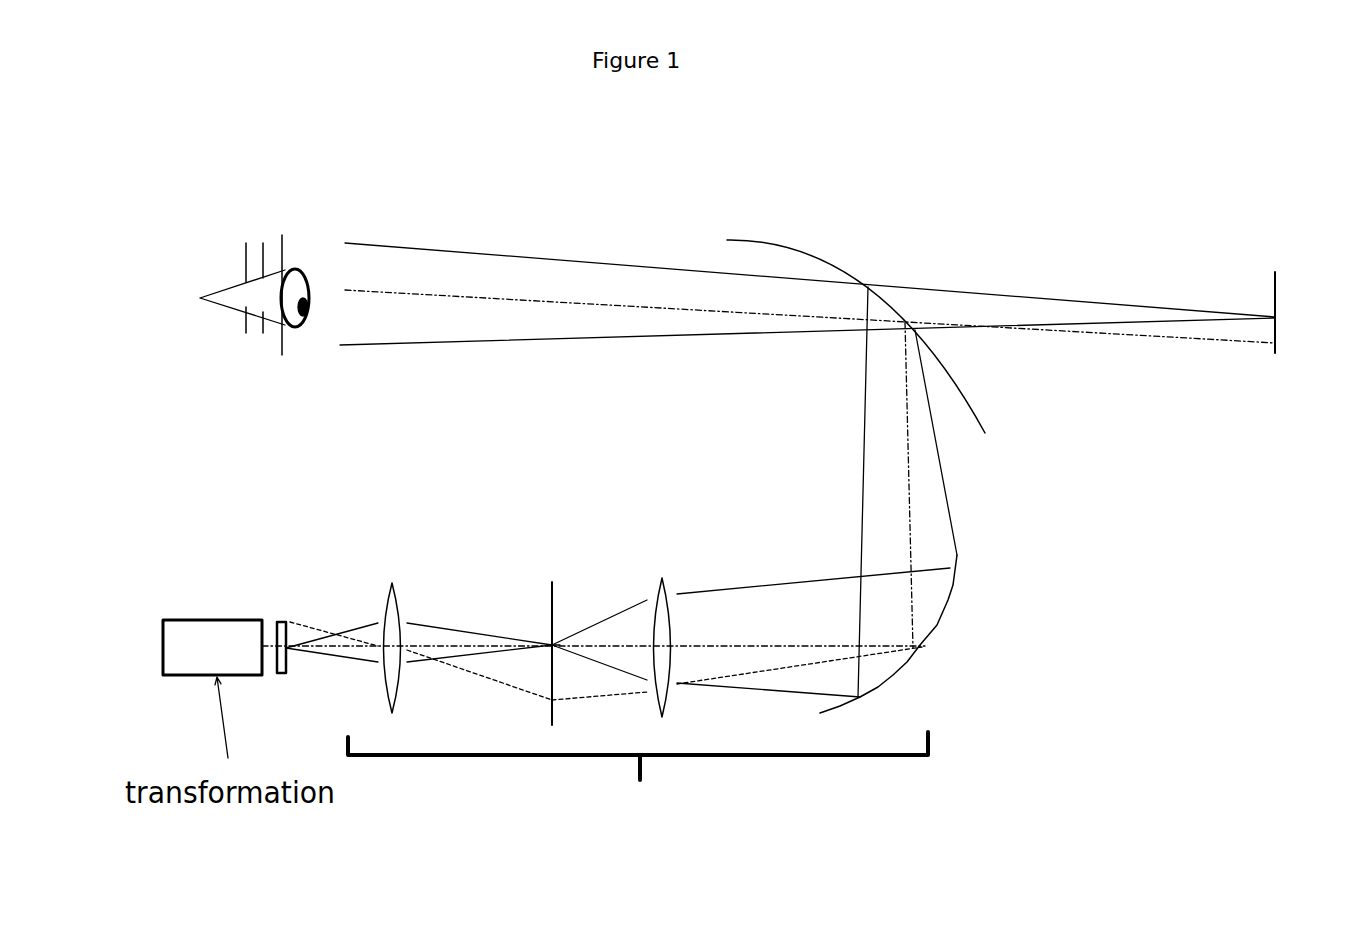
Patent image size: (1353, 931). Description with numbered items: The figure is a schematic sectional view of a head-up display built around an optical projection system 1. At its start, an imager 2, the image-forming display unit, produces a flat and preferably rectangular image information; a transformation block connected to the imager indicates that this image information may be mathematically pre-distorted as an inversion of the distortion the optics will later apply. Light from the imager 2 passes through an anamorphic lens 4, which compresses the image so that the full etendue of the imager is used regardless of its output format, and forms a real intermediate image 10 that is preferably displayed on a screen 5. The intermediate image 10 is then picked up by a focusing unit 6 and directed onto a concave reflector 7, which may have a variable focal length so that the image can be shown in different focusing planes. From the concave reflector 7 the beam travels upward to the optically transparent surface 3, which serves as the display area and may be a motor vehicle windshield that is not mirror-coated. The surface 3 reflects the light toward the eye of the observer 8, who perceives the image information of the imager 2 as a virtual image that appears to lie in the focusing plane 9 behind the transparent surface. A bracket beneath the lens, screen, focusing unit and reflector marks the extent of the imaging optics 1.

The optical projection system 1 is at (638, 790).
The imager 2 is at (285, 679).
The optically transparent surface 3 is at (758, 237).
The anamorphic lens 4 is at (394, 695).
The screen 5 is at (543, 579).
The focusing unit 6 is at (639, 564).
The concave reflector 7 is at (942, 623).
The observer 8 is at (268, 349).
The focusing plane 9 is at (1262, 252).
The intermediate image 10 is at (574, 665).